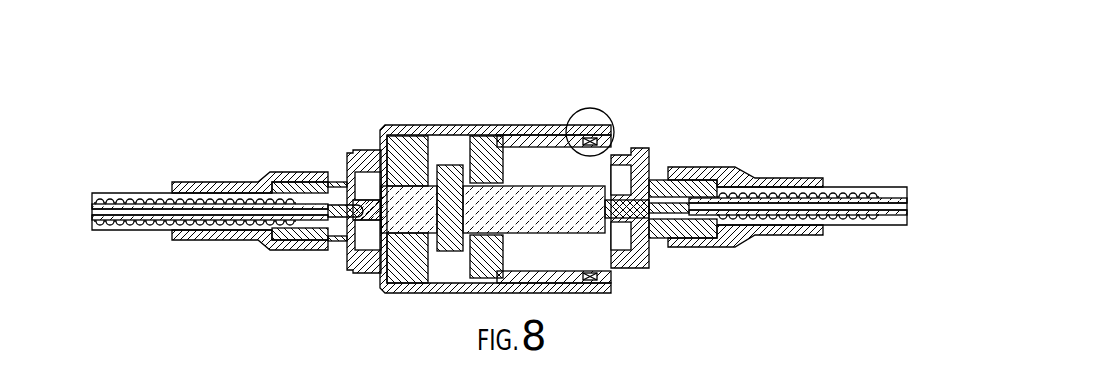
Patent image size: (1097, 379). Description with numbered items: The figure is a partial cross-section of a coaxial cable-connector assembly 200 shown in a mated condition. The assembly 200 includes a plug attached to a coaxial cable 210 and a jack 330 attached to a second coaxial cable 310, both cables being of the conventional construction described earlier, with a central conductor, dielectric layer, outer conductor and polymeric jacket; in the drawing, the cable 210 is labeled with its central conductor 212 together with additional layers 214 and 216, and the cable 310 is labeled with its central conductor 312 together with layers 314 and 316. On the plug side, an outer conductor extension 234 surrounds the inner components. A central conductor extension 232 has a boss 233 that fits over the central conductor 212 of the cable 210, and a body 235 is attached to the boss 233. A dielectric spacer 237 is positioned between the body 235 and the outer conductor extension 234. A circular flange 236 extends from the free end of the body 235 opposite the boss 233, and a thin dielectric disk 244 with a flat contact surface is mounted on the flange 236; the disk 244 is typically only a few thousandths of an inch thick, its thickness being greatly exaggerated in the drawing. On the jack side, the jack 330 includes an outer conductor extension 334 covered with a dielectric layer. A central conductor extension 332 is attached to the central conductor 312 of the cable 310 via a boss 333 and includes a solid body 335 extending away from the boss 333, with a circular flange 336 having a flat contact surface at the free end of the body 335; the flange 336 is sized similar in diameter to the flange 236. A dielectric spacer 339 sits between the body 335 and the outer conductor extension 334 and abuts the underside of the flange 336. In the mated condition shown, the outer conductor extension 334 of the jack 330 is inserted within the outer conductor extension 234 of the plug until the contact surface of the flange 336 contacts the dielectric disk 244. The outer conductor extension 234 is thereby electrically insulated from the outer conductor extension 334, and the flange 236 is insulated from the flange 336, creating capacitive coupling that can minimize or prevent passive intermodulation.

The coaxial cable-connector assembly 200 is at (330, 78).
The coaxial cable 210 is at (236, 148).
The central conductor 212 is at (100, 231).
The first cable outer jacket 214 is at (110, 193).
The first cable outer conductor 216 is at (155, 193).
The central conductor extension 232 is at (376, 227).
The boss 233 is at (333, 207).
The outer conductor extension 234 is at (362, 150).
The body 235 is at (400, 185).
The circular flange 236 is at (428, 246).
The dielectric spacer 237 is at (415, 152).
The dielectric disk 244 is at (445, 262).
The coaxial cable 310 is at (771, 164).
The central conductor 312 is at (852, 214).
The second cable outer conductor 314 is at (893, 226).
The second cable outer jacket 316 is at (880, 187).
The jack 330 is at (693, 147).
The central conductor extension 332 is at (600, 243).
The boss 333 is at (643, 220).
The outer conductor extension 334 is at (628, 155).
The solid body 335 is at (557, 233).
The circular flange 336 is at (466, 255).
The dielectric spacer 339 is at (505, 150).